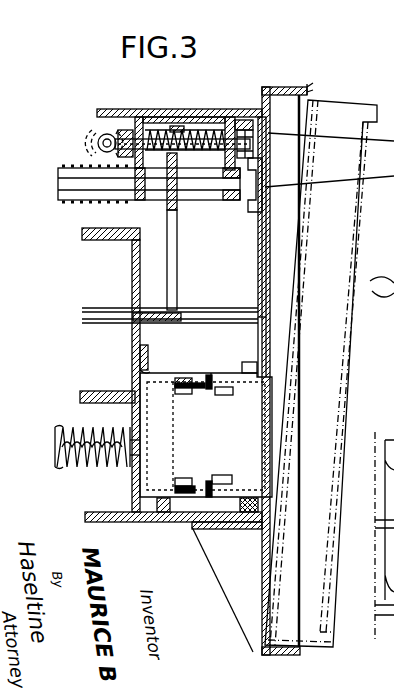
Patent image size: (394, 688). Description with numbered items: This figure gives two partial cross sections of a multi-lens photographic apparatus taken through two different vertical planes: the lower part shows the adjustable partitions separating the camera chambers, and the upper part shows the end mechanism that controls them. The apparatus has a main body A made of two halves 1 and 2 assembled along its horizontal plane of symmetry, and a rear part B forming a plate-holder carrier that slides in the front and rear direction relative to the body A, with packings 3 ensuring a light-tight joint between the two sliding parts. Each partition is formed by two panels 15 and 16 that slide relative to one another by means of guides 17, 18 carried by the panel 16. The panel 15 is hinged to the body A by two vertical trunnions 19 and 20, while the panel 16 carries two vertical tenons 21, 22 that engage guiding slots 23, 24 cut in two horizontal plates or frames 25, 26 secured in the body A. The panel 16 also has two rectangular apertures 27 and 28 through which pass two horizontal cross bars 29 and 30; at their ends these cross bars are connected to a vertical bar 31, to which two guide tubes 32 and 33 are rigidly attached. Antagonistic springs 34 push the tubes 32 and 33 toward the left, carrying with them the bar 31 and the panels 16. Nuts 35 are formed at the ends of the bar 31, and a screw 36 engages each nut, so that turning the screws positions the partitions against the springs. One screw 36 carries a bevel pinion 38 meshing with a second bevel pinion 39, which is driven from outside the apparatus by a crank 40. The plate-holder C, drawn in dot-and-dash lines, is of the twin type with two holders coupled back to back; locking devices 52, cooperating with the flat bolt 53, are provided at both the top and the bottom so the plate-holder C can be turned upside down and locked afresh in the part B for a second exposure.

The half of main body 1 is at (82, 236).
The half of main body 2 is at (86, 516).
The packings 3 is at (237, 108).
The panel 15 is at (150, 458).
The panel 16 is at (273, 392).
The guide 17 is at (176, 394).
The guide 18 is at (228, 395).
The vertical trunnion 19 is at (128, 362).
The vertical trunnion 20 is at (137, 520).
The vertical tenon 21 is at (211, 375).
The vertical tenon 22 is at (209, 480).
The guiding slot 23 is at (207, 378).
The guiding slot 24 is at (205, 503).
The horizontal plate 25 is at (246, 372).
The horizontal plate 26 is at (232, 484).
The rectangular aperture 27 is at (200, 390).
The rectangular aperture 28 is at (195, 478).
The horizontal cross bar 29 is at (210, 390).
The horizontal cross bar 30 is at (182, 508).
The vertical bar 31 is at (177, 262).
The guide tube 32 is at (72, 177).
The guide tube 33 is at (66, 470).
The antagonistic spring 34 is at (82, 200).
The nut 35 is at (168, 128).
The screw 36 is at (205, 138).
The bevel pinion 38 is at (126, 130).
The bevel pinion 39 is at (97, 135).
The crank 40 is at (382, 294).
The locking device 52 is at (340, 103).
The flat bolt 53 is at (312, 88).
The main body A is at (113, 108).
The rear part B is at (276, 92).
The plate-holder C is at (317, 430).